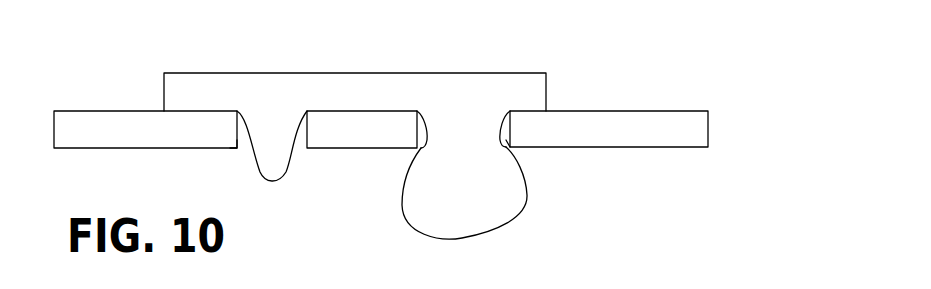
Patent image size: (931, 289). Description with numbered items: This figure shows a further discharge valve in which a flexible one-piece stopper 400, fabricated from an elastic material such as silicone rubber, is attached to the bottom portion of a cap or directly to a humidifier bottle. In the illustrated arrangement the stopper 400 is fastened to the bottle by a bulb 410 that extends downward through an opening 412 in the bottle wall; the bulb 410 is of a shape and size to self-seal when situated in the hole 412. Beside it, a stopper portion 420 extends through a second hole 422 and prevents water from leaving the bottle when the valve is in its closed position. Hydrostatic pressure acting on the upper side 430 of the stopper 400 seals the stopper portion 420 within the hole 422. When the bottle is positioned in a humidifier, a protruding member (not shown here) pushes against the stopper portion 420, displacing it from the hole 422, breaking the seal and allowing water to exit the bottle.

The stopper 400 is at (418, 135).
The bulb 410 is at (498, 210).
The opening 412 is at (512, 146).
The stopper portion 420 is at (272, 173).
The second hole 422 is at (237, 147).
The upper side 430 is at (327, 73).